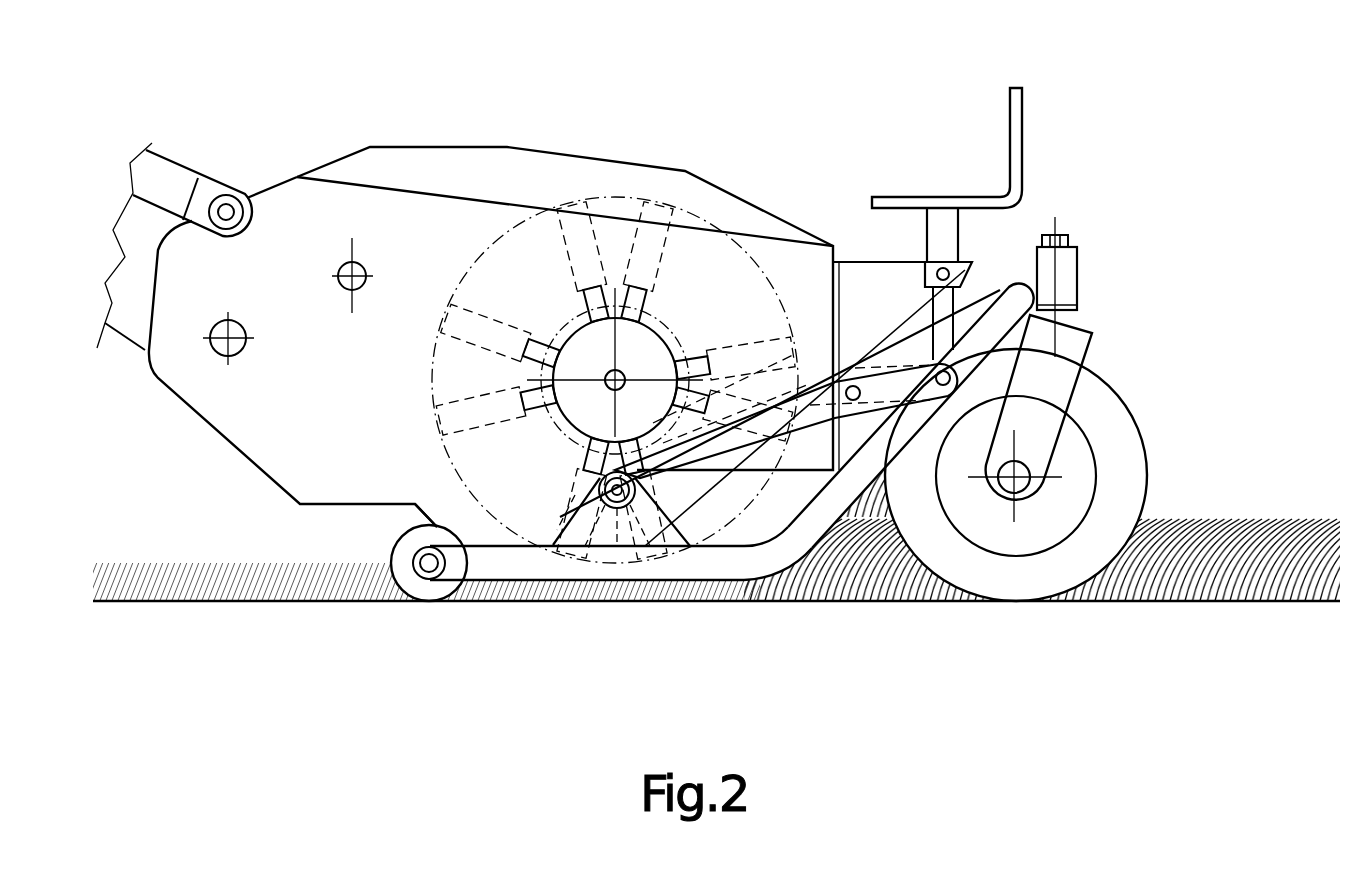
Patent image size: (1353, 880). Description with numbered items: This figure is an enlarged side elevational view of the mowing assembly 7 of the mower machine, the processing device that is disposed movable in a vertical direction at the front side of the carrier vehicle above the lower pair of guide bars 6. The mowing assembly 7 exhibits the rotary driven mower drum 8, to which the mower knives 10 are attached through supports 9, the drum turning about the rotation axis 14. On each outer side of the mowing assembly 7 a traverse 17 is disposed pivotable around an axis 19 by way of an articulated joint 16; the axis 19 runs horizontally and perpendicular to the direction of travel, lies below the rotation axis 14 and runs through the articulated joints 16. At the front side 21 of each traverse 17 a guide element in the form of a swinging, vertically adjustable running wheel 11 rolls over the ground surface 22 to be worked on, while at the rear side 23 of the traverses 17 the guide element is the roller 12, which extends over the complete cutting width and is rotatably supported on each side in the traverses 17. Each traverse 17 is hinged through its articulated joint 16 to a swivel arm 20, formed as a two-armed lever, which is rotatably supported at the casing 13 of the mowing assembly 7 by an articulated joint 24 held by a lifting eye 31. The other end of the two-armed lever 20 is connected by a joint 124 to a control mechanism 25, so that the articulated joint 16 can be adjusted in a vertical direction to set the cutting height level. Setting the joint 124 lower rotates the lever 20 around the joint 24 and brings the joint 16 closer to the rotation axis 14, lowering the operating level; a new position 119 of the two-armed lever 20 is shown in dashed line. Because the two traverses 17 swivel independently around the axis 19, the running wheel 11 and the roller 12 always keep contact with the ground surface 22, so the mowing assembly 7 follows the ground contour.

The lower pair of guide bars 6 is at (165, 185).
The mowing assembly 7 is at (660, 152).
The mower drum 8 is at (588, 345).
The supports 9 is at (655, 340).
The mower knives 10 is at (657, 207).
The running wheel 11 is at (1108, 395).
The roller 12 is at (405, 550).
The casing 13 is at (370, 172).
The rotation axis 14 is at (620, 380).
The articulated joint 16 is at (617, 495).
The traverse 17 is at (773, 572).
The axis 19 is at (615, 505).
The swivel arm 20 is at (705, 462).
The front side 21 is at (945, 237).
The ground surface 22 is at (1015, 602).
The rear side 23 is at (467, 557).
The articulated joint 24 is at (853, 390).
The control mechanism 25 is at (1012, 278).
The lifting eye 31 is at (823, 455).
The new position of the two-armed lever 119 is at (540, 448).
The joint 124 is at (922, 410).